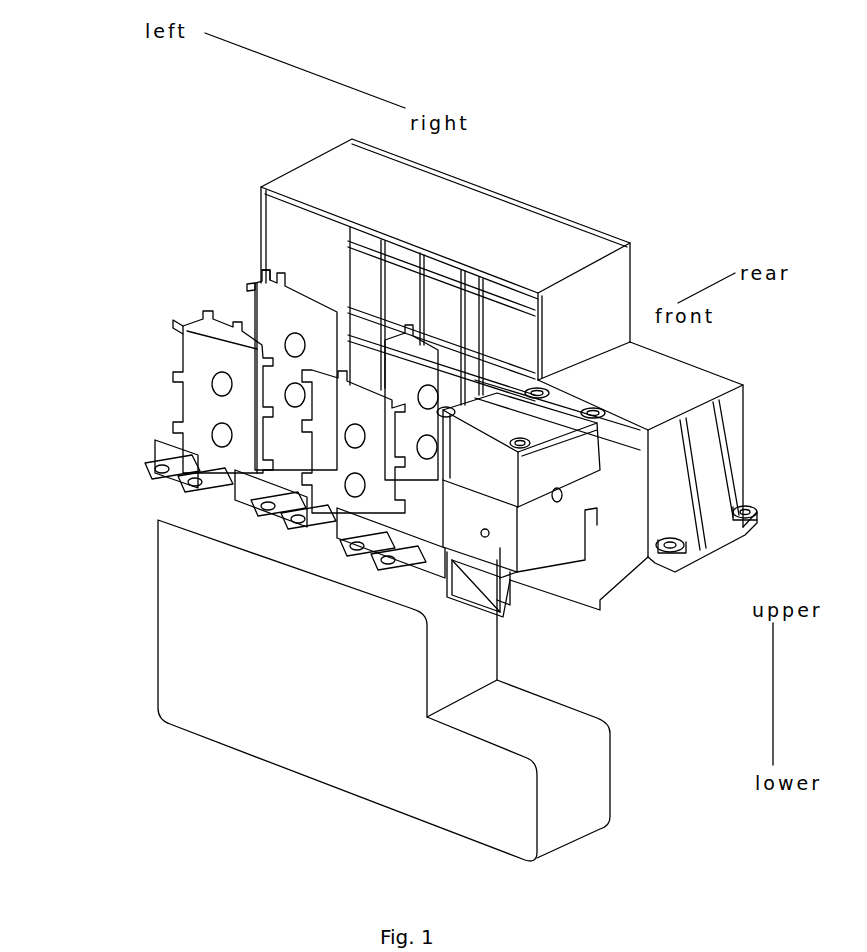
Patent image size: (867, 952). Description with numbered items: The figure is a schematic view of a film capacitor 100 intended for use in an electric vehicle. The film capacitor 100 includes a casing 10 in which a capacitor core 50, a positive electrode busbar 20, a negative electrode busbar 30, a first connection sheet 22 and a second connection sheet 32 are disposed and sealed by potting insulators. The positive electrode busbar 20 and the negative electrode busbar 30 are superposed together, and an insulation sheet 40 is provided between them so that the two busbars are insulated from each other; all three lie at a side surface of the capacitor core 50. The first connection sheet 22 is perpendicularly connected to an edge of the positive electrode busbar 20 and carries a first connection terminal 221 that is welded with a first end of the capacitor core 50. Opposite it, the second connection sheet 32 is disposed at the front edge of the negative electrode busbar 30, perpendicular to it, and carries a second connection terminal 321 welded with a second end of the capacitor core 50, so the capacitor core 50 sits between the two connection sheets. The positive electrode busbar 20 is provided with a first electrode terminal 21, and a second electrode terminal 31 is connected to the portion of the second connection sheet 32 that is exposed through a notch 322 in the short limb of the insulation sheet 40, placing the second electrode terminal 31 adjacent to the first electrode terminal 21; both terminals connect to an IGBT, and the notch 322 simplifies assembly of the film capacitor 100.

The film capacitor 100 is at (500, 102).
The casing 10 is at (473, 220).
The positive electrode busbar 20 is at (547, 593).
The first electrode terminal 21 is at (145, 471).
The first connection sheet 22 is at (277, 317).
The first connection terminal 221 is at (258, 281).
The negative electrode busbar 30 is at (550, 581).
The second electrode terminal 31 is at (220, 480).
The second connection sheet 32 is at (193, 366).
The second connection terminal 321 is at (178, 322).
The notch 322 is at (500, 603).
The insulation sheet 40 is at (548, 590).
The capacitor core 50 is at (570, 798).